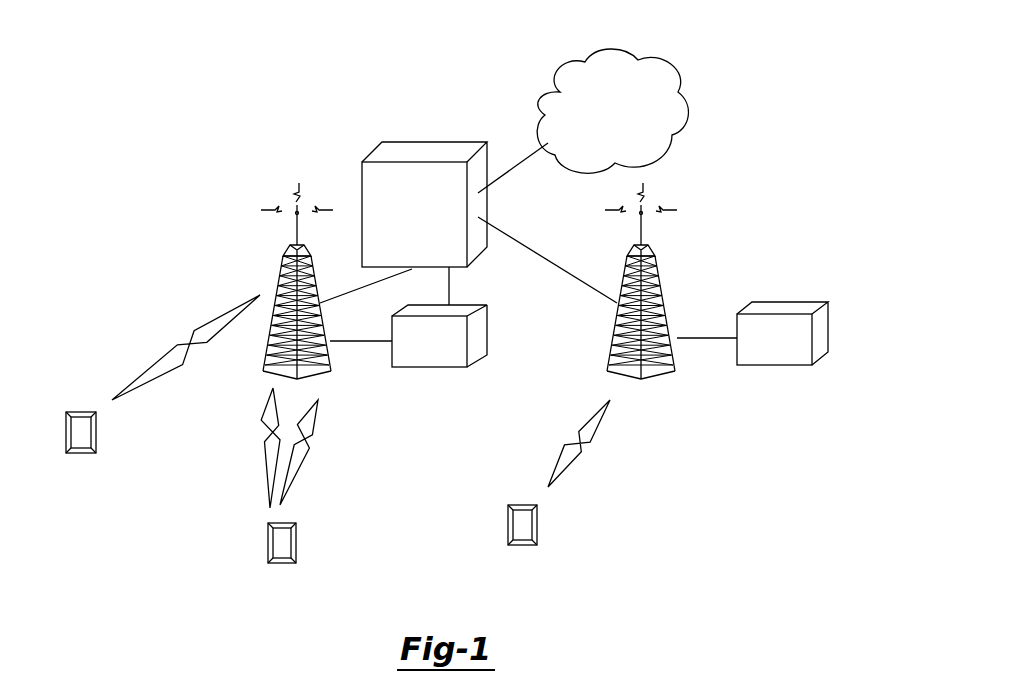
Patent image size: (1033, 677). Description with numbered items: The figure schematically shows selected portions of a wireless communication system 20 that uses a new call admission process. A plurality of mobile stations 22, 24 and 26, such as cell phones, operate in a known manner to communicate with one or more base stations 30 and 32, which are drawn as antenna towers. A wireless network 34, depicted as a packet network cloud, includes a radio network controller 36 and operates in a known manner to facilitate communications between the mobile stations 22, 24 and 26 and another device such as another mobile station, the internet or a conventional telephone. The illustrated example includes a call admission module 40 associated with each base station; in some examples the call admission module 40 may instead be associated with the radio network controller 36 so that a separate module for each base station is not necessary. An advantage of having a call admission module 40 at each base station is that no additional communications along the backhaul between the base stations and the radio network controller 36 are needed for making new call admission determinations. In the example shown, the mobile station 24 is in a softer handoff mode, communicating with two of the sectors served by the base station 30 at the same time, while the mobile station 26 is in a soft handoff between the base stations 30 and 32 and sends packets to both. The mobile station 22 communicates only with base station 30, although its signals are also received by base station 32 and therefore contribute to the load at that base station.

The wireless communication system 20 is at (738, 163).
The mobile station 22 is at (96, 430).
The mobile station 24 is at (296, 540).
The mobile station 26 is at (537, 522).
The base station 30 is at (265, 352).
The base station 32 is at (610, 348).
The wireless network 34 is at (649, 55).
The radio network controller 36 is at (388, 151).
The call admission module 40 is at (446, 350).